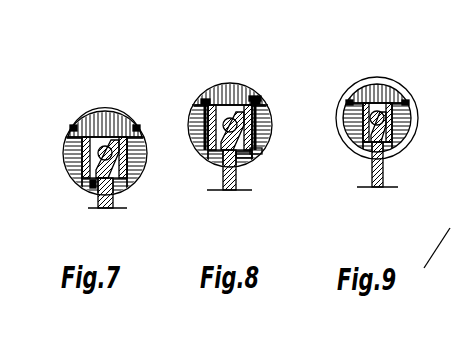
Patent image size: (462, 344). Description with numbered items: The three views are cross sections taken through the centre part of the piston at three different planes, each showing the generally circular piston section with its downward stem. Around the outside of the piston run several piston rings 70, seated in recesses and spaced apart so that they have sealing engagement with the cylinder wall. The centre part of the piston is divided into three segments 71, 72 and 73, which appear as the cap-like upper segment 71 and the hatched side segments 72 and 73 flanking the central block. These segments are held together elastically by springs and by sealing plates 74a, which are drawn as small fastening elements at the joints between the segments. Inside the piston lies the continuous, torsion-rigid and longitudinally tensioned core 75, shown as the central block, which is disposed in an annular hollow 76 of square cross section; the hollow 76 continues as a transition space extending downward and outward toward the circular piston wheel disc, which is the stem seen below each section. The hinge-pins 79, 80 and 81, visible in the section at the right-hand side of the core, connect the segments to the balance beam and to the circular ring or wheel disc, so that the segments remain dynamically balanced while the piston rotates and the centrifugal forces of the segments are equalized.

In FIG. 9, the piston ring 70 is at (385, 84).
In FIG. 7, the segment 71 is at (117, 132).
In FIG. 8, the segment 71 is at (240, 100).
In FIG. 9, the segment 71 is at (351, 102).
In FIG. 7, the segment 72 is at (70, 172).
In FIG. 8, the segment 72 is at (200, 128).
In FIG. 9, the segment 72 is at (358, 140).
In FIG. 7, the segment 73 is at (137, 178).
In FIG. 8, the segment 73 is at (262, 122).
In FIG. 9, the segment 73 is at (404, 128).
In FIG. 7, the sealing plate 74a is at (72, 128).
In FIG. 8, the sealing plate 74a is at (262, 105).
In FIG. 7, the core 75 is at (97, 138).
In FIG. 8, the core 75 is at (228, 103).
In FIG. 9, the core 75 is at (394, 115).
In FIG. 7, the annular hollow 76 is at (113, 192).
In FIG. 8, the annular hollow 76 is at (267, 118).
In FIG. 9, the annular hollow 76 is at (395, 150).
In FIG. 8, the hinge-pin 79 is at (258, 152).
In FIG. 8, the hinge-pin 80 is at (262, 138).
In FIG. 8, the hinge-pin 81 is at (257, 100).